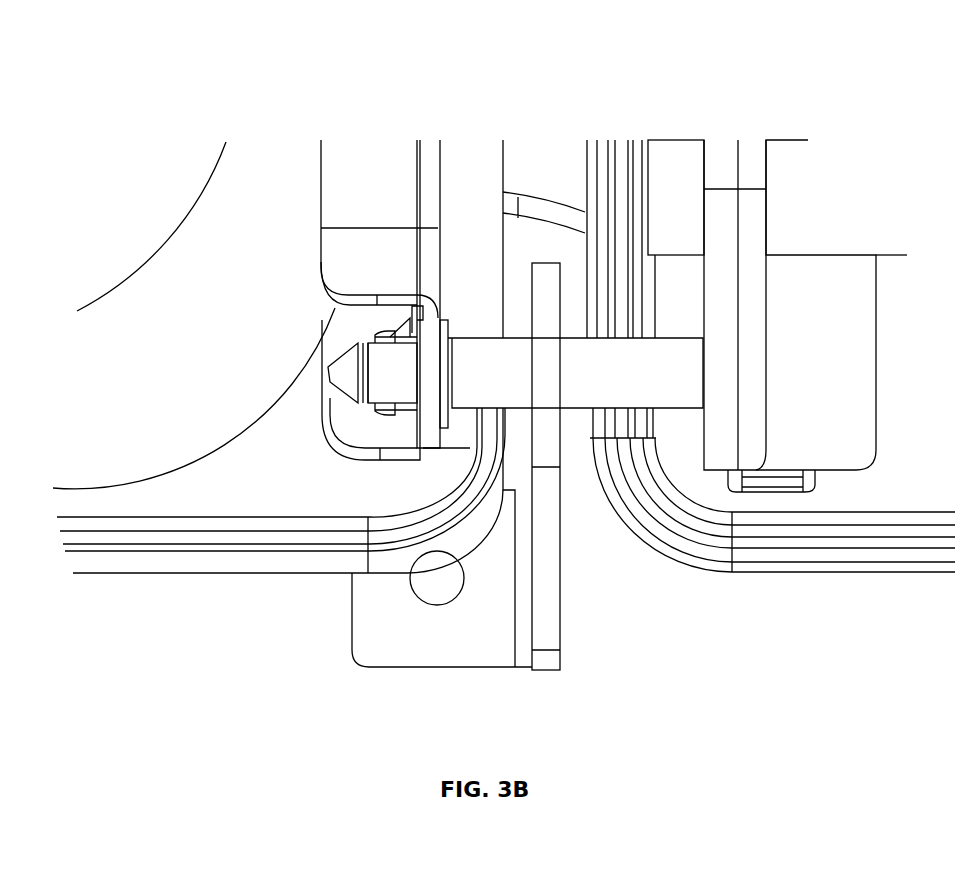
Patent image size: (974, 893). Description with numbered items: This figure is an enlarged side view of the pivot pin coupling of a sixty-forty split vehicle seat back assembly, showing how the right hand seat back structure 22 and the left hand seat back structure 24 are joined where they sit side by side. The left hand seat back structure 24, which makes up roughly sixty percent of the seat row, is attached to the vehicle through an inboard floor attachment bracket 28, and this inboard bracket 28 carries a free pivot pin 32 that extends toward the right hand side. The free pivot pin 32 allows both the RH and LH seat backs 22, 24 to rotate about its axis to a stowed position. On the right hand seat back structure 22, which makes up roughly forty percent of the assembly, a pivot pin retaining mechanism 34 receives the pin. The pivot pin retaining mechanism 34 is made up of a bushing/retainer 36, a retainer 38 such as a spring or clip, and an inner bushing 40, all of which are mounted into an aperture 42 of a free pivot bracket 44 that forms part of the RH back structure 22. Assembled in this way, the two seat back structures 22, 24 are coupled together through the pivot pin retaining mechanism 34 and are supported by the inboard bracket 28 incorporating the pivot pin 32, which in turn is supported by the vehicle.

The right hand seat back structure 22 is at (135, 135).
The left hand seat back structure 24 is at (777, 133).
The inboard floor attachment bracket 28 is at (540, 605).
The free pivot pin 32 is at (622, 380).
The pivot pin retaining mechanism 34 is at (417, 305).
The bushing/retainer 36 is at (405, 382).
The retainer 38 is at (417, 318).
The inner bushing 40 is at (452, 410).
The aperture 42 is at (415, 372).
The free pivot bracket 44 is at (322, 428).